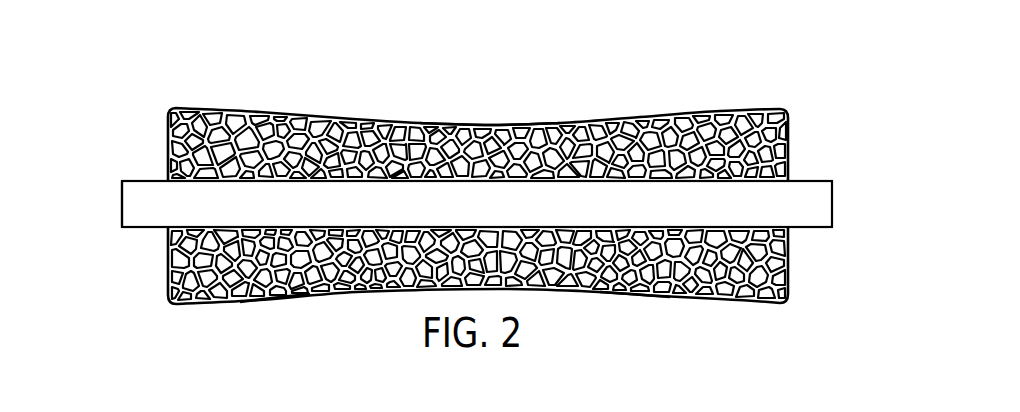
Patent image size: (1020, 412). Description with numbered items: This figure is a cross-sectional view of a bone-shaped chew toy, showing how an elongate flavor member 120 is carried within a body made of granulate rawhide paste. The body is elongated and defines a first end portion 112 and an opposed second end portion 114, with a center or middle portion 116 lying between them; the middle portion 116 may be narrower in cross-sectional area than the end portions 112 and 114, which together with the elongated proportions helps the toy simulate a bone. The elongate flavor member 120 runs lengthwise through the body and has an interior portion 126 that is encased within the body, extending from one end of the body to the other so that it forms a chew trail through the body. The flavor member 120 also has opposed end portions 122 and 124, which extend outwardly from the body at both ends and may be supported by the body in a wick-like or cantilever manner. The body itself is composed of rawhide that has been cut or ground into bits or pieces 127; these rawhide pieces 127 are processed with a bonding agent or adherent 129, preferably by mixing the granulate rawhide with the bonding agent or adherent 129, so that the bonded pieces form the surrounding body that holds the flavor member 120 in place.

The first end portion 112 is at (476, 214).
The second end portion 114 is at (170, 258).
The middle portion 116 is at (487, 137).
The flavor member 120 is at (282, 193).
The end portion of flavor member 122 is at (481, 141).
The end portion of flavor member 124 is at (134, 204).
The interior portion 126 is at (622, 203).
The rawhide pieces 127 is at (276, 299).
The bonding agent or adherent 129 is at (633, 293).